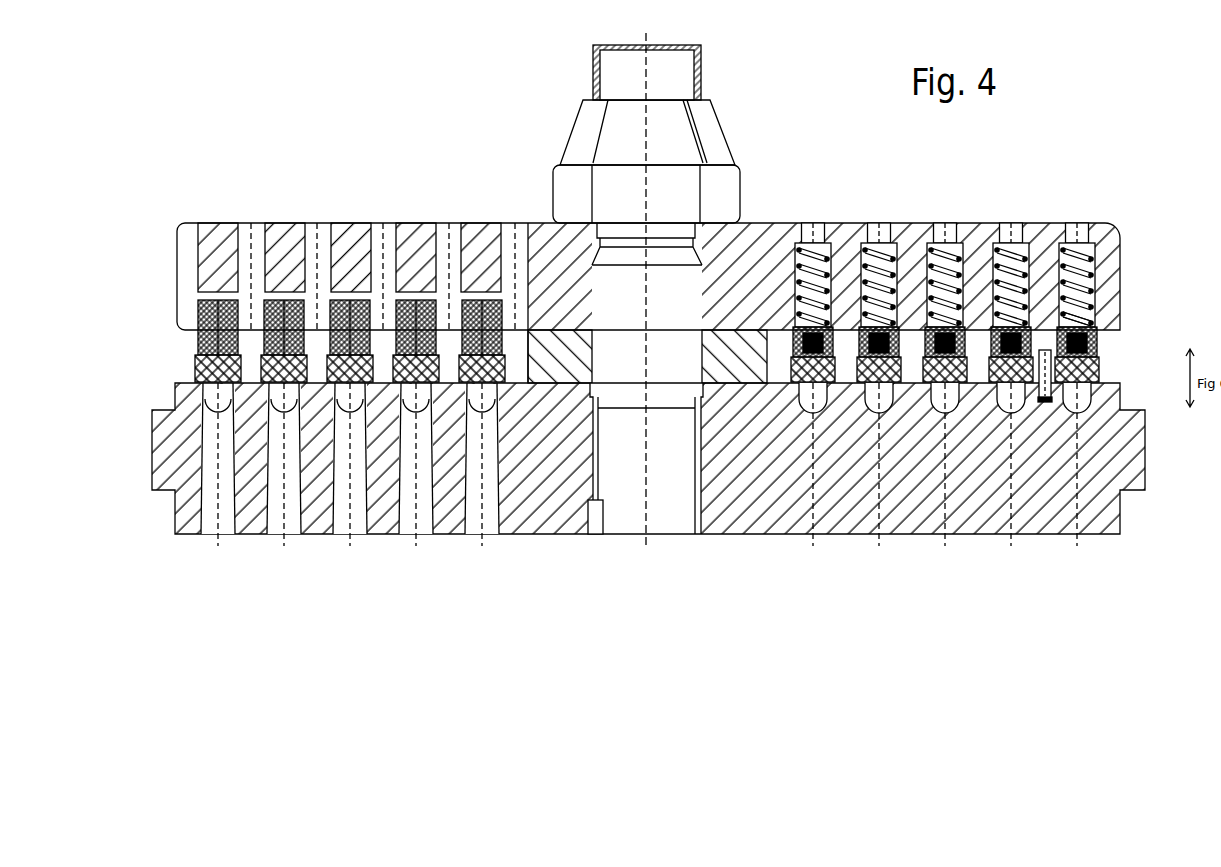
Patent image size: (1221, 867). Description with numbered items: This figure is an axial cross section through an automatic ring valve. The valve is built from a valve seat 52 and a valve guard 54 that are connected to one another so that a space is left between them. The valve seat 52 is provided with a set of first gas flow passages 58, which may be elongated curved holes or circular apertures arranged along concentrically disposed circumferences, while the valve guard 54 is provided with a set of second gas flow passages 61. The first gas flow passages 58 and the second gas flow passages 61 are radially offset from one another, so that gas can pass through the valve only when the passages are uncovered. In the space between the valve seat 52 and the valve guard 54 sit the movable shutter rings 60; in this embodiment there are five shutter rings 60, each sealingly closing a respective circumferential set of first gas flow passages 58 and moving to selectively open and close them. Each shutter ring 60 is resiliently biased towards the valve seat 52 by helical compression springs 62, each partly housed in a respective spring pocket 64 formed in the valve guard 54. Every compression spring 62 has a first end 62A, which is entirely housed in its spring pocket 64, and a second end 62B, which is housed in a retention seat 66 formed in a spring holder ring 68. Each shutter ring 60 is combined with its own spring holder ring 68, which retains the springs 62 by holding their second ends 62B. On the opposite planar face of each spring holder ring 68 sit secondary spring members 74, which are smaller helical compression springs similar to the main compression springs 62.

The valve seat 52 is at (984, 533).
The valve guard 54 is at (180, 247).
The first gas flow passages 58 is at (408, 529).
The shutter rings 60 is at (195, 368).
The second gas flow passages 61 is at (323, 226).
The helical compression springs 62 is at (990, 273).
The first end 62A is at (1106, 216).
The second end 62B is at (1125, 320).
The spring pocket 64 is at (1118, 286).
The retention seat 66 is at (1118, 285).
The spring holder ring 68 is at (1103, 342).
The secondary spring members 74 is at (797, 357).